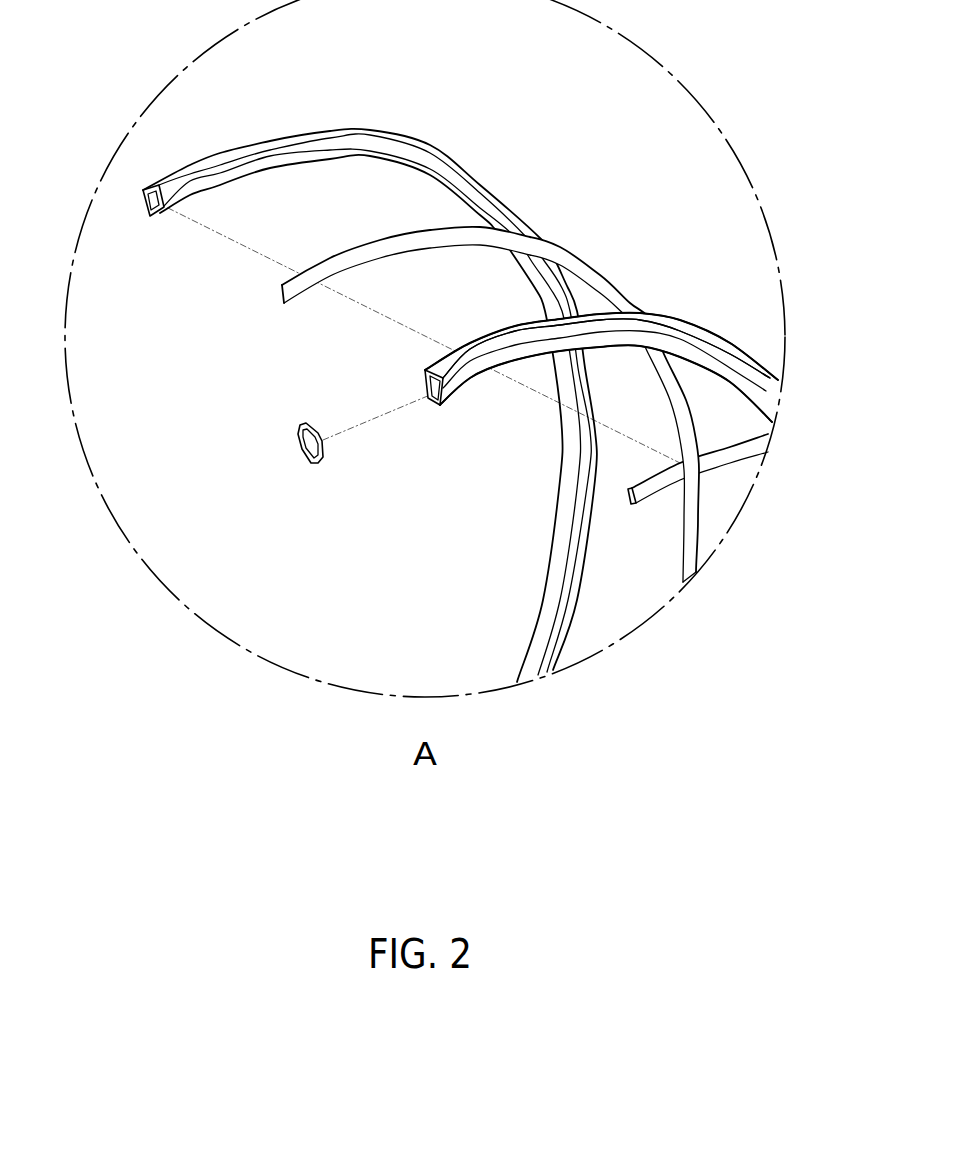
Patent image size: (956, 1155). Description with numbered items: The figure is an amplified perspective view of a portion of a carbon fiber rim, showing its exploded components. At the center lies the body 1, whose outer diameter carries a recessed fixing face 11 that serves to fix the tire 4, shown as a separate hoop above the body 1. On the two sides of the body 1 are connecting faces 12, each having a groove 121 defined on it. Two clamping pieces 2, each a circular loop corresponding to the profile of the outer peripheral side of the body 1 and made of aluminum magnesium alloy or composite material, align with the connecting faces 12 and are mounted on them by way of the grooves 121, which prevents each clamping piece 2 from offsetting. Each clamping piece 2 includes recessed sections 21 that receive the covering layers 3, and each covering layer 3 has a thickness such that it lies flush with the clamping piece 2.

The body 1 is at (738, 348).
The recessed fixing face 11 is at (620, 313).
The connecting face 12 is at (778, 392).
The groove 121 is at (750, 364).
The clamping piece 2 is at (571, 253).
The recessed section 21 is at (630, 502).
The covering layer 3 is at (310, 463).
The tire 4 is at (277, 140).